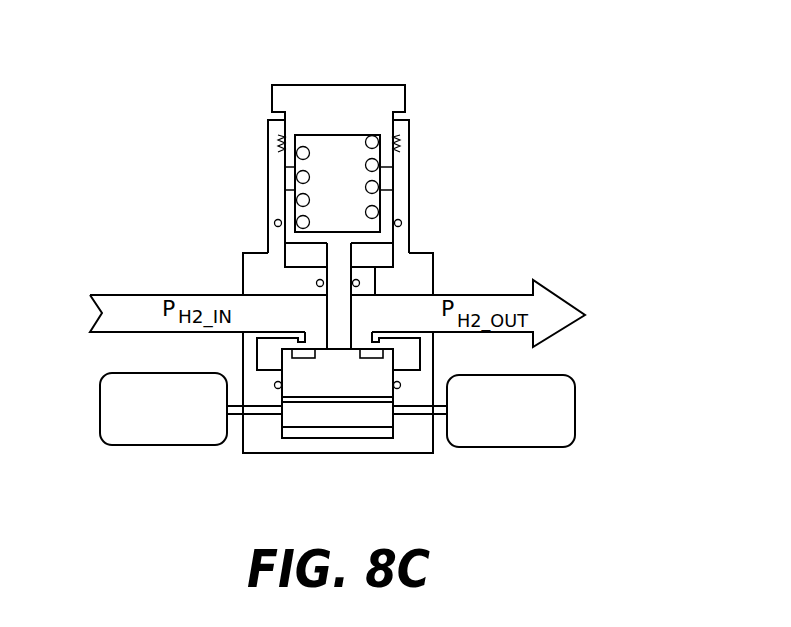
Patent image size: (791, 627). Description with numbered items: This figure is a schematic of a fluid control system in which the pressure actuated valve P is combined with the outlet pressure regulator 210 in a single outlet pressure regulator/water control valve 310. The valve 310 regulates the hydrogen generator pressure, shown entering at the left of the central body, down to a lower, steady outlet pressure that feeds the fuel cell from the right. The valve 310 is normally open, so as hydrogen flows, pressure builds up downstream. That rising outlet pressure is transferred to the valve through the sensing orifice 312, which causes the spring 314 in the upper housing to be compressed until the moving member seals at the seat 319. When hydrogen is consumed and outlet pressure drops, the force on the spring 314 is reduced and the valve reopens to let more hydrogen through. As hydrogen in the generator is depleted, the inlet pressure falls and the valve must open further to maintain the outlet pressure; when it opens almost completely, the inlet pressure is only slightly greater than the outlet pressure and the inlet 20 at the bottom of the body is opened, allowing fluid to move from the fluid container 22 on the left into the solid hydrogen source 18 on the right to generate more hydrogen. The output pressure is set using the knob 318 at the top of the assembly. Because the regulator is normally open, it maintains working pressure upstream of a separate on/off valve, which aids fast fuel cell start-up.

The knob 318 is at (375, 98).
The outlet pressure regulator/water control valve 310 is at (267, 178).
The spring 314 is at (378, 187).
The sensing orifice 312 is at (378, 281).
The outlet pressure regulator 210 is at (433, 272).
The seat 319 is at (384, 352).
The inlet 20 is at (358, 408).
The fluid container 22 is at (152, 438).
The solid hydrogen source 18 is at (512, 435).
The pressure actuated valve P is at (243, 287).